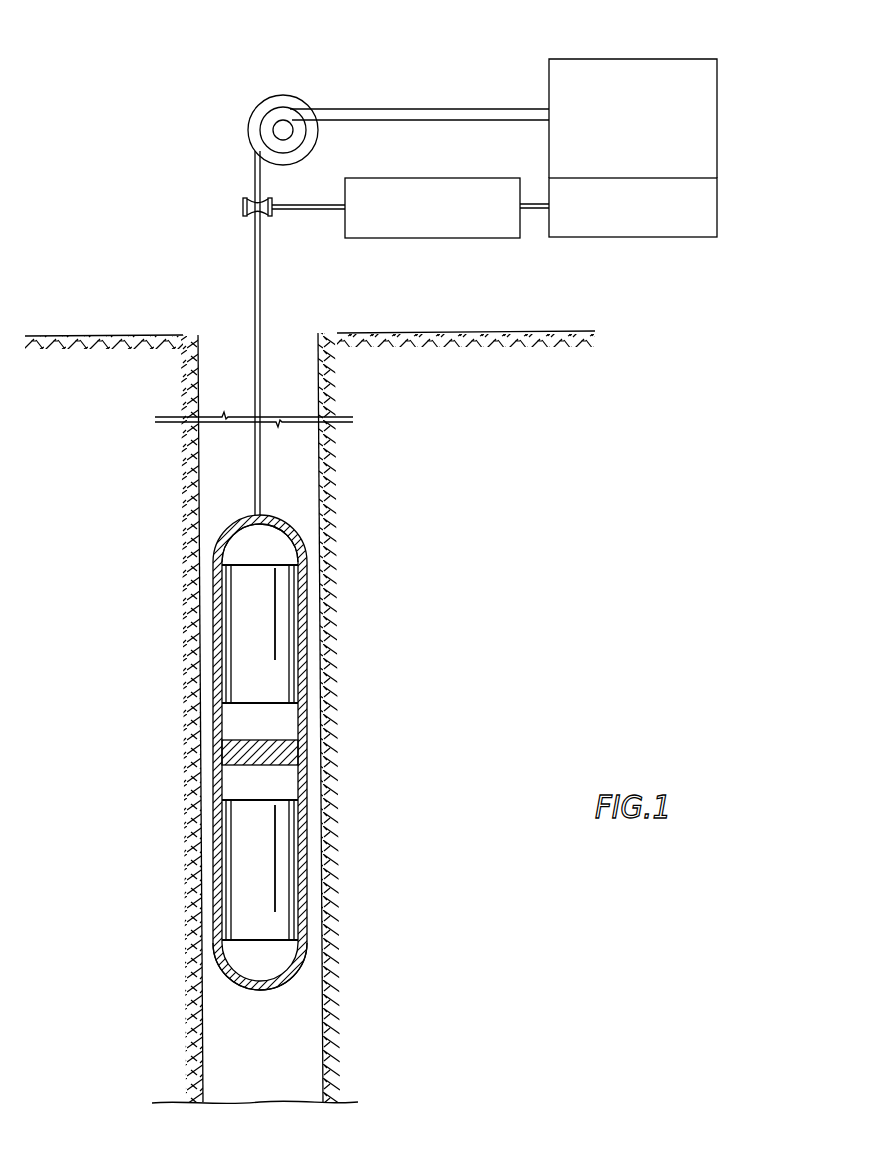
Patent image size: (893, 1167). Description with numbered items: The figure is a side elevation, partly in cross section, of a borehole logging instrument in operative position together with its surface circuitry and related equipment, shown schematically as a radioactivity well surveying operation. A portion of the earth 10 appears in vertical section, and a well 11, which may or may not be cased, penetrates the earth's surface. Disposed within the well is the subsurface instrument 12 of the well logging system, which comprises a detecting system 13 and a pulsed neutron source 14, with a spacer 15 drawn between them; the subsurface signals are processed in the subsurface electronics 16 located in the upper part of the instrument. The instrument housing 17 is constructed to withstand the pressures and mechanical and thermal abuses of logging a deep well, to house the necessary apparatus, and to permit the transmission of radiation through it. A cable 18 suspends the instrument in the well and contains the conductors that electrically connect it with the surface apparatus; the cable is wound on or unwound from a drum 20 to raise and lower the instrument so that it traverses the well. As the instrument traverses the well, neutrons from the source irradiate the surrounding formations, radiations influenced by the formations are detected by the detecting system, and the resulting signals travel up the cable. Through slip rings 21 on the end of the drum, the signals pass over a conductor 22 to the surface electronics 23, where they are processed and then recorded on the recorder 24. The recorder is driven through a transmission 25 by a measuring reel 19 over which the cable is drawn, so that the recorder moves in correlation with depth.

The earth 10 is at (101, 335).
The well 11 is at (223, 360).
The subsurface instrument 12 is at (280, 519).
The detecting system 13 is at (283, 625).
The pulsed neutron source 14 is at (288, 876).
The shielding spacer 15 is at (298, 750).
The subsurface electronics 16 is at (283, 548).
The instrument housing 17 is at (300, 980).
The cable 18 is at (262, 305).
The measuring reel 19 is at (242, 207).
The drum 20 is at (250, 126).
The slip rings 21 is at (294, 130).
The conductor 22 is at (400, 109).
The surface electronics 23 is at (621, 59).
The recorder 24 is at (640, 238).
The transmission 25 is at (467, 238).